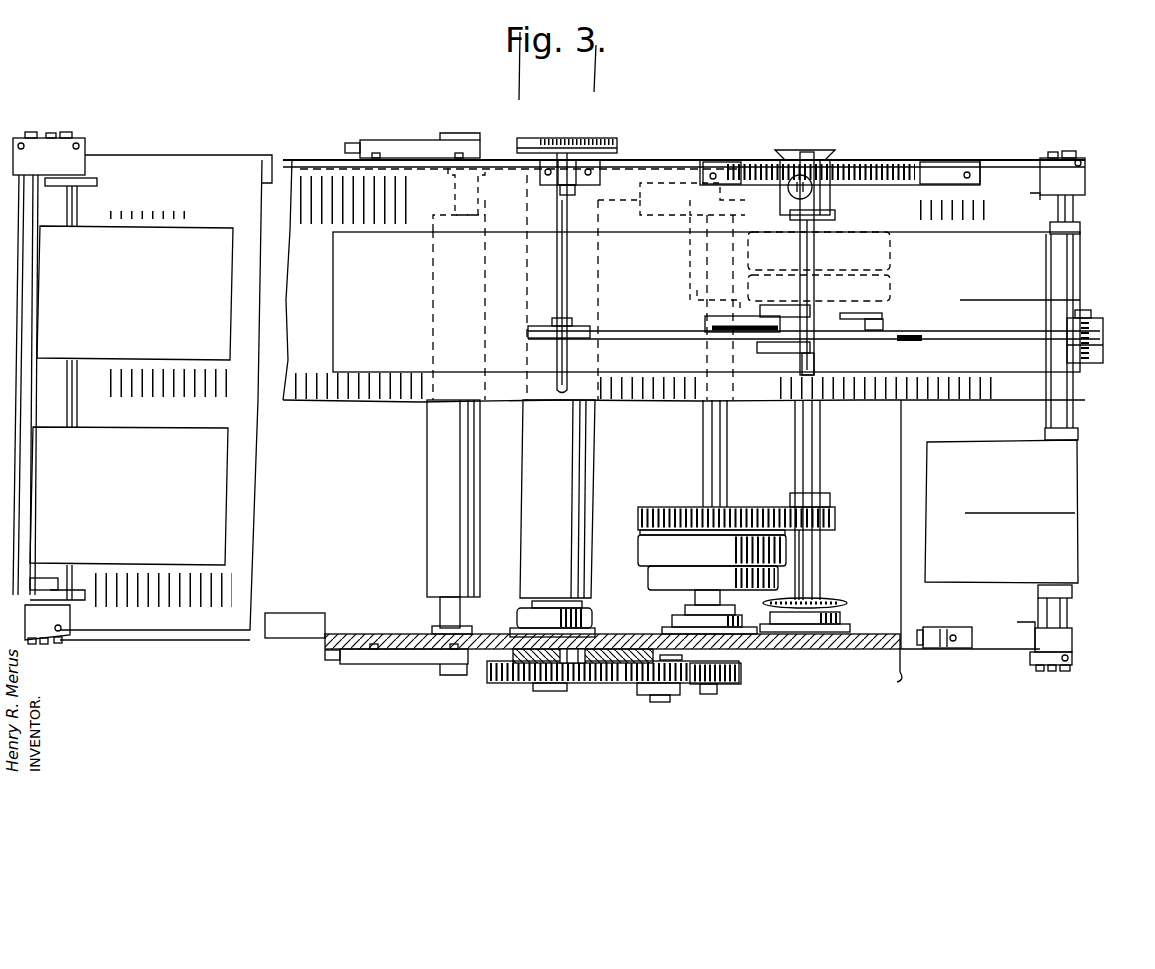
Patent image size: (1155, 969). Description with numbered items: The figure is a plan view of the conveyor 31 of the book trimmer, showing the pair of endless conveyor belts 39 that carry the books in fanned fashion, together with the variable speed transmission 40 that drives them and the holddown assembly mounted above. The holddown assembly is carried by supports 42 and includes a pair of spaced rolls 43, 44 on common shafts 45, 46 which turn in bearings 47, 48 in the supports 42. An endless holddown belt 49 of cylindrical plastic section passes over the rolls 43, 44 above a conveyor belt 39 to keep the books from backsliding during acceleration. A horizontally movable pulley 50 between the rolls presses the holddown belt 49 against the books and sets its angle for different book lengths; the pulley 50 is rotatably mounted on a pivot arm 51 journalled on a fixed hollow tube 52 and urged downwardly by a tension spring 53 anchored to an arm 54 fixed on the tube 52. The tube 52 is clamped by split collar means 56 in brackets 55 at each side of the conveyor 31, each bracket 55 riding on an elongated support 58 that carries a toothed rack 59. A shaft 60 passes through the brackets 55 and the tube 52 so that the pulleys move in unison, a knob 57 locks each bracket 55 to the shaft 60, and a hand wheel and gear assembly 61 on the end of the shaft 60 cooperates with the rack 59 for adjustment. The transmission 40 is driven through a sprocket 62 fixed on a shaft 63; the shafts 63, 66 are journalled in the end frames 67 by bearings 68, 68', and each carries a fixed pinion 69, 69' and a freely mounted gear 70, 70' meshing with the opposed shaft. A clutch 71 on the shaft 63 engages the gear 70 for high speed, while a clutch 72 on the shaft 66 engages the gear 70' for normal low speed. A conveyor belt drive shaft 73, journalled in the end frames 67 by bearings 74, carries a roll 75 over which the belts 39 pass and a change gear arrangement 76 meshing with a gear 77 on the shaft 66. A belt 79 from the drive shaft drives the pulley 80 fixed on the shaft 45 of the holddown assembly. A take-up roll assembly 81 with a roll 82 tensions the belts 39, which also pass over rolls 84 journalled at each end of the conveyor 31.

The conveyor 31 is at (222, 652).
The conveyor belts 39 is at (153, 350).
The variable speed transmission 40 is at (752, 682).
The supports 42 is at (600, 176).
The roll 43 is at (578, 328).
The roll 44 is at (1100, 323).
The shaft 45 is at (570, 264).
The shaft 46 is at (1092, 316).
The bearing 47 is at (548, 183).
The bearing 48 is at (1080, 180).
The holddown belt 49 is at (996, 337).
The pulley 50 is at (912, 342).
The pivot arm 51 is at (882, 318).
The tube 52 is at (800, 256).
The tension spring 53 is at (740, 334).
The arm 54 is at (770, 305).
The bracket 55 is at (788, 213).
The split collar means 56 is at (830, 208).
The knob 57 is at (808, 178).
The elongated support 58 is at (982, 170).
The toothed rack 59 is at (935, 175).
The shaft 60 is at (798, 368).
The hand wheel and gear assembly 61 is at (790, 157).
The sprocket 62 is at (832, 600).
The shaft 63 is at (822, 455).
The shaft 66 is at (730, 455).
The end frames 67 is at (297, 165).
The bearings 68 is at (776, 414).
The upper bearing 68' is at (666, 209).
The pinion 69 is at (761, 511).
The pinion 69' is at (693, 284).
The gear 70 is at (847, 289).
The gear 70' is at (706, 499).
The clutch 71 is at (888, 262).
The clutch 72 is at (645, 553).
The conveyor belt drive shaft 73 is at (568, 600).
The bearings 74 is at (522, 618).
The roll 75 is at (528, 503).
The gear arrangement 76 is at (614, 688).
The gear 77 is at (736, 686).
The belt 79 is at (620, 145).
The pulley 80 is at (600, 137).
The take-up roll assembly 81 is at (412, 130).
The roll 82 is at (428, 553).
The rolls 84 is at (60, 584).